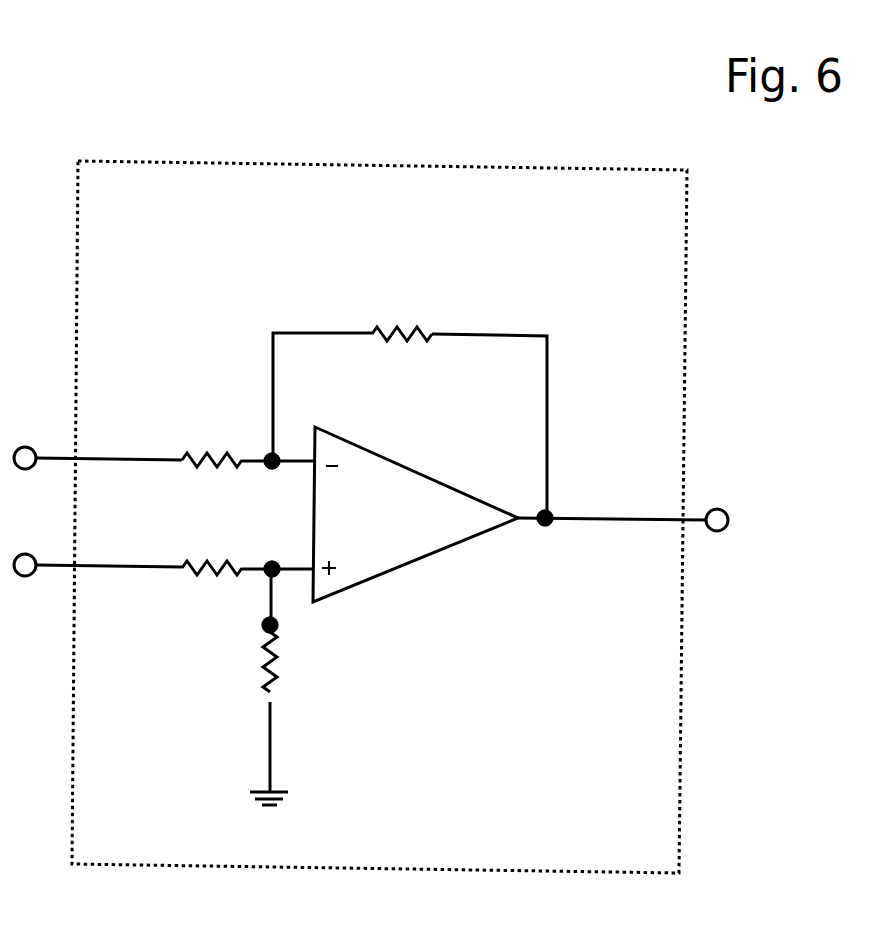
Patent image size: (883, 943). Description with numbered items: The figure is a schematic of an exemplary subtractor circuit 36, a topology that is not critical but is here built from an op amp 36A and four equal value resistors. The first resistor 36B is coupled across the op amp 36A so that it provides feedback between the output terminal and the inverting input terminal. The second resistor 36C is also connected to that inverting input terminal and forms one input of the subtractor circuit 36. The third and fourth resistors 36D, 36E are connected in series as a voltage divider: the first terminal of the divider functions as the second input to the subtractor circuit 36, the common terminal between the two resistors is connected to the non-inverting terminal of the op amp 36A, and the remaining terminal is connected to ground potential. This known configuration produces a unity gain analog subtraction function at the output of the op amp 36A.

The subtractor circuit 36 is at (221, 162).
The op amp 36A is at (437, 552).
The first resistor 36B is at (396, 322).
The second resistor 36C is at (200, 458).
The third resistor 36D is at (215, 578).
The fourth resistor 36E is at (283, 670).